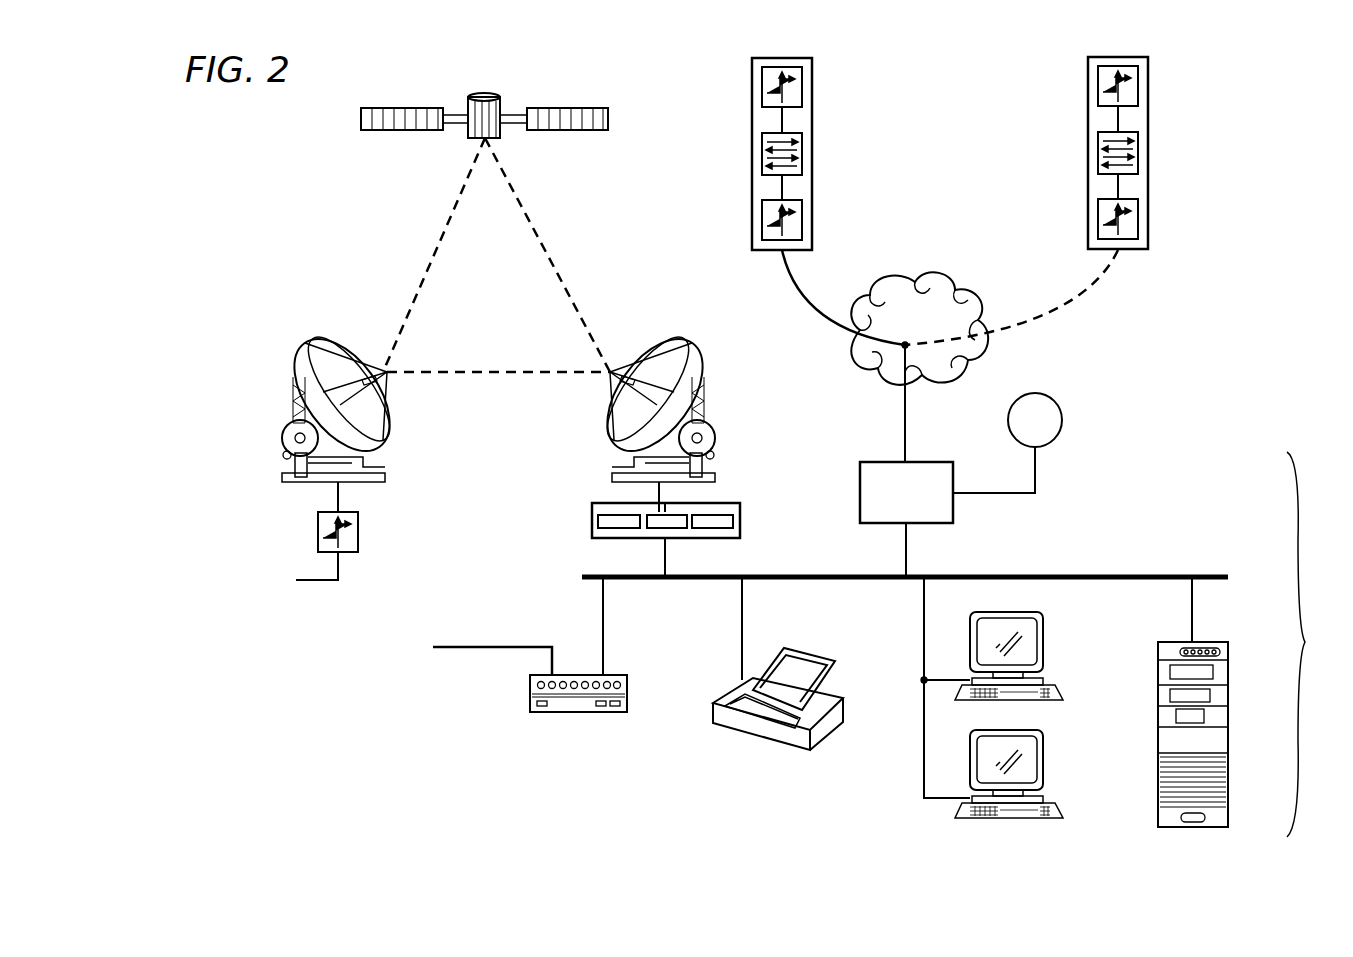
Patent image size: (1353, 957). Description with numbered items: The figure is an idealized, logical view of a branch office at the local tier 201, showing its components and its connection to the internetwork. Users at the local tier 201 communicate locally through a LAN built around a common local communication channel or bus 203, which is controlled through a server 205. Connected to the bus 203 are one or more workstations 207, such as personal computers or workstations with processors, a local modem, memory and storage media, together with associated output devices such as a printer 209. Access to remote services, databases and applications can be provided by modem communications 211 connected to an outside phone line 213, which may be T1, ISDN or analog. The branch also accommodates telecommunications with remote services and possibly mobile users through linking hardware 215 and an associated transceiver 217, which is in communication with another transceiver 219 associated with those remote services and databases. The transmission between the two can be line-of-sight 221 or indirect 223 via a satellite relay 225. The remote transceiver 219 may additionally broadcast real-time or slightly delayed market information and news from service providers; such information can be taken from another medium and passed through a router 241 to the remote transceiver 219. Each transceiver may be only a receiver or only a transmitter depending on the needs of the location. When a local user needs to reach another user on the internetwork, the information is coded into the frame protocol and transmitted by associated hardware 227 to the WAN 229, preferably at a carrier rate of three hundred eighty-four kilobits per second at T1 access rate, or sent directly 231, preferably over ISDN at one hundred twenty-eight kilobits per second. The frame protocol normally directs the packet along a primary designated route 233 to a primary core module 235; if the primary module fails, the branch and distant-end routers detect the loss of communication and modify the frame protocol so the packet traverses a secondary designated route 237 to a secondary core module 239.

The local tier 201 is at (1316, 644).
The bus 203 is at (1130, 576).
The server 205 is at (1220, 641).
The workstations 207 is at (1044, 758).
The printer 209 is at (765, 745).
The modem communications 211 is at (565, 713).
The outside phone line 213 is at (460, 646).
The linking hardware 215 is at (591, 518).
The transceiver 217 is at (680, 340).
The remote transceiver 219 is at (305, 342).
The line-of-sight transmission 221 is at (495, 371).
The indirect transmission 223 is at (458, 216).
The satellite relay 225 is at (488, 94).
The associated hardware 227 is at (947, 461).
The WAN 229 is at (912, 272).
The direct connection 231 is at (1035, 420).
The primary designated route 233 is at (790, 278).
The primary core module 235 is at (814, 105).
The secondary designated route 237 is at (1073, 298).
The secondary core module 239 is at (1151, 96).
The router 241 is at (359, 532).